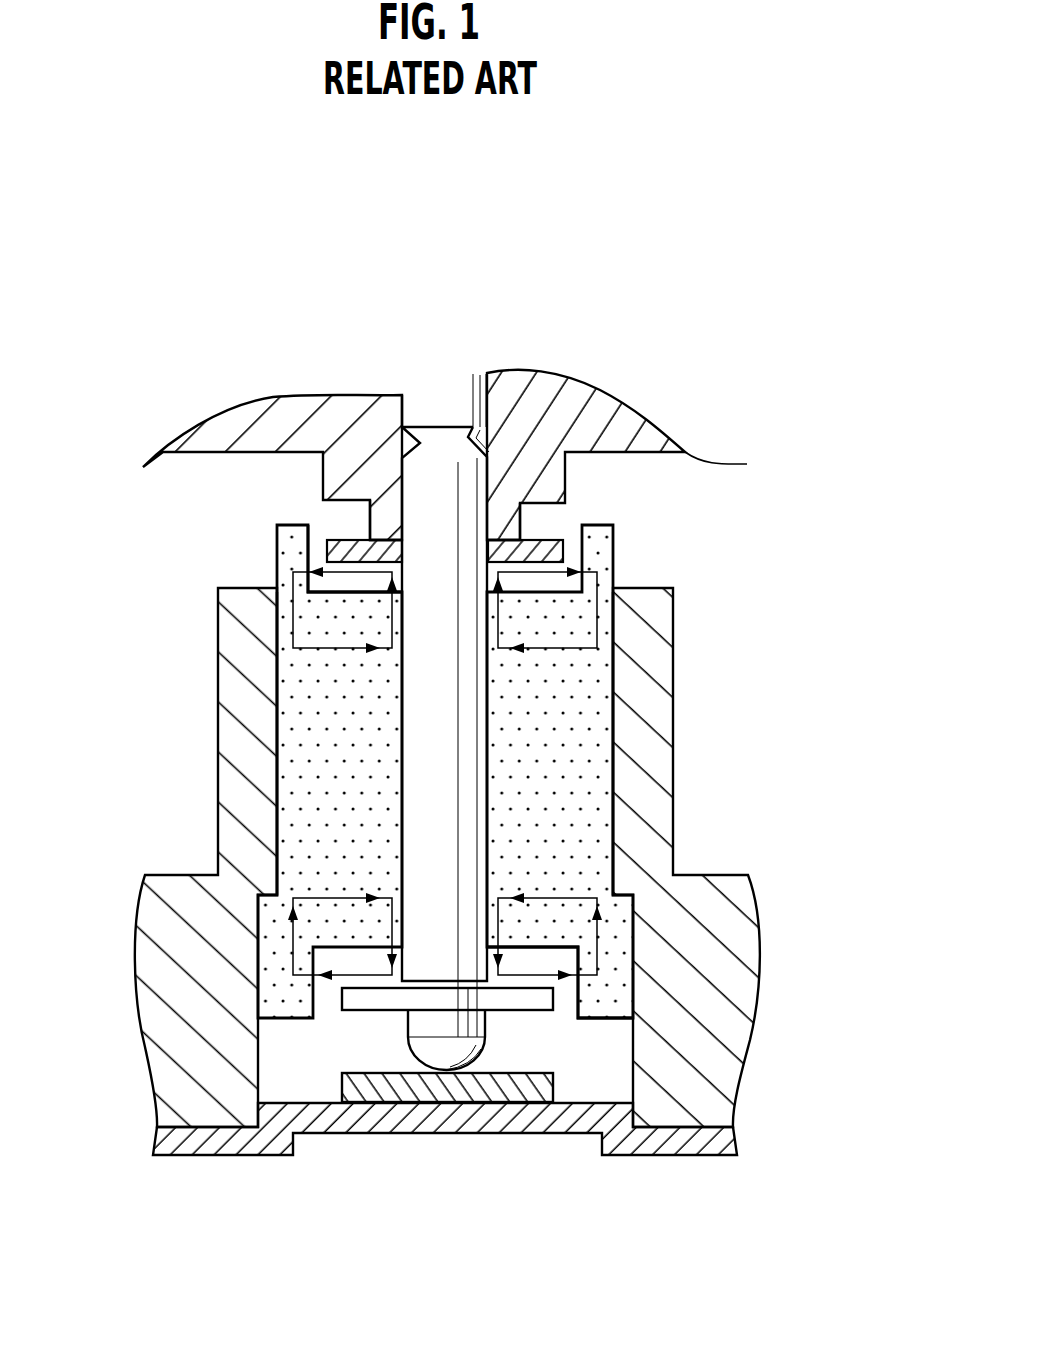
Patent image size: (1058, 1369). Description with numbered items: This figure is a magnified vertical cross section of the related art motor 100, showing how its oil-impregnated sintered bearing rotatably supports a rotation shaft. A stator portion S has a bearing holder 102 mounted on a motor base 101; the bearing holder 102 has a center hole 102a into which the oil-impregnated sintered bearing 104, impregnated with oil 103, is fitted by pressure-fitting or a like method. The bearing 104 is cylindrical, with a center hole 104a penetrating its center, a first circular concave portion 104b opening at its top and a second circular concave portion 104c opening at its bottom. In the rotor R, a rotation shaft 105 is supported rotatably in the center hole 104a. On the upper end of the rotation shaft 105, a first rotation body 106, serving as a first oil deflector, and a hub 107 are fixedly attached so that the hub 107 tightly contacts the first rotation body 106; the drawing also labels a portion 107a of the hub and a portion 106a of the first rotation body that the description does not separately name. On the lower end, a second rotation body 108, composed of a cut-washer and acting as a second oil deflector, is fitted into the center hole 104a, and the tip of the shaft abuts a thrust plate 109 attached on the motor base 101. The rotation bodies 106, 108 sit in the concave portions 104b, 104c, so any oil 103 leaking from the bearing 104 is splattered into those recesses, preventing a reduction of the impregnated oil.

The related art motor 100 is at (656, 257).
The rotor R is at (200, 393).
The hub 107 is at (322, 395).
The head of pin 107a is at (466, 520).
The rotation shaft 105 is at (487, 530).
The opening of plate 106a is at (470, 512).
The first rotation body 106 is at (552, 530).
The bearing holder 102 is at (680, 777).
The center hole 102a is at (610, 686).
The oil-impregnated sintered bearing 104 is at (296, 760).
The oil 103 is at (605, 612).
The center hole 104a is at (403, 780).
The first circular concave portion 104b is at (308, 527).
The second circular concave portion 104c is at (577, 1000).
The second rotation body 108 is at (377, 998).
The thrust plate 109 is at (445, 1108).
The motor base 101 is at (687, 1137).
The stator portion S is at (247, 1207).